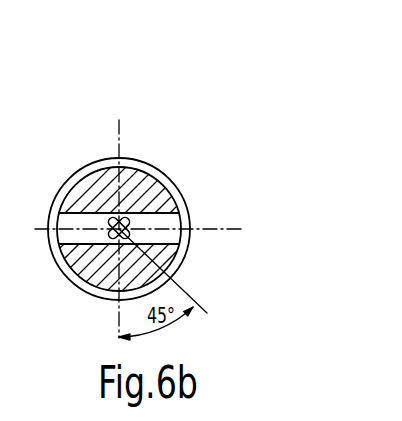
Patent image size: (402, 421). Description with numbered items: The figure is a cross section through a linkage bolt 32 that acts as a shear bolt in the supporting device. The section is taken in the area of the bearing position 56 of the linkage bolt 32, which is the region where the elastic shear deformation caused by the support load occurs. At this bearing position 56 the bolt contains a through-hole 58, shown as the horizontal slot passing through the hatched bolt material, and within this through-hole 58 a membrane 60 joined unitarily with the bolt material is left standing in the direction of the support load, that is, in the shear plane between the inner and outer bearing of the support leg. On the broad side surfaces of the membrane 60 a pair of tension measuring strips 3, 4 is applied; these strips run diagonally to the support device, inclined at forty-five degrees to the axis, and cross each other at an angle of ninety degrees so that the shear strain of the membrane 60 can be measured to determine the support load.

The tension measuring strip 3 is at (114, 221).
The tension measuring strip 4 is at (130, 224).
The linkage bolt 32 is at (143, 182).
The bearing position 56 is at (102, 295).
The through-hole 58 is at (177, 222).
The membrane 60 is at (187, 212).